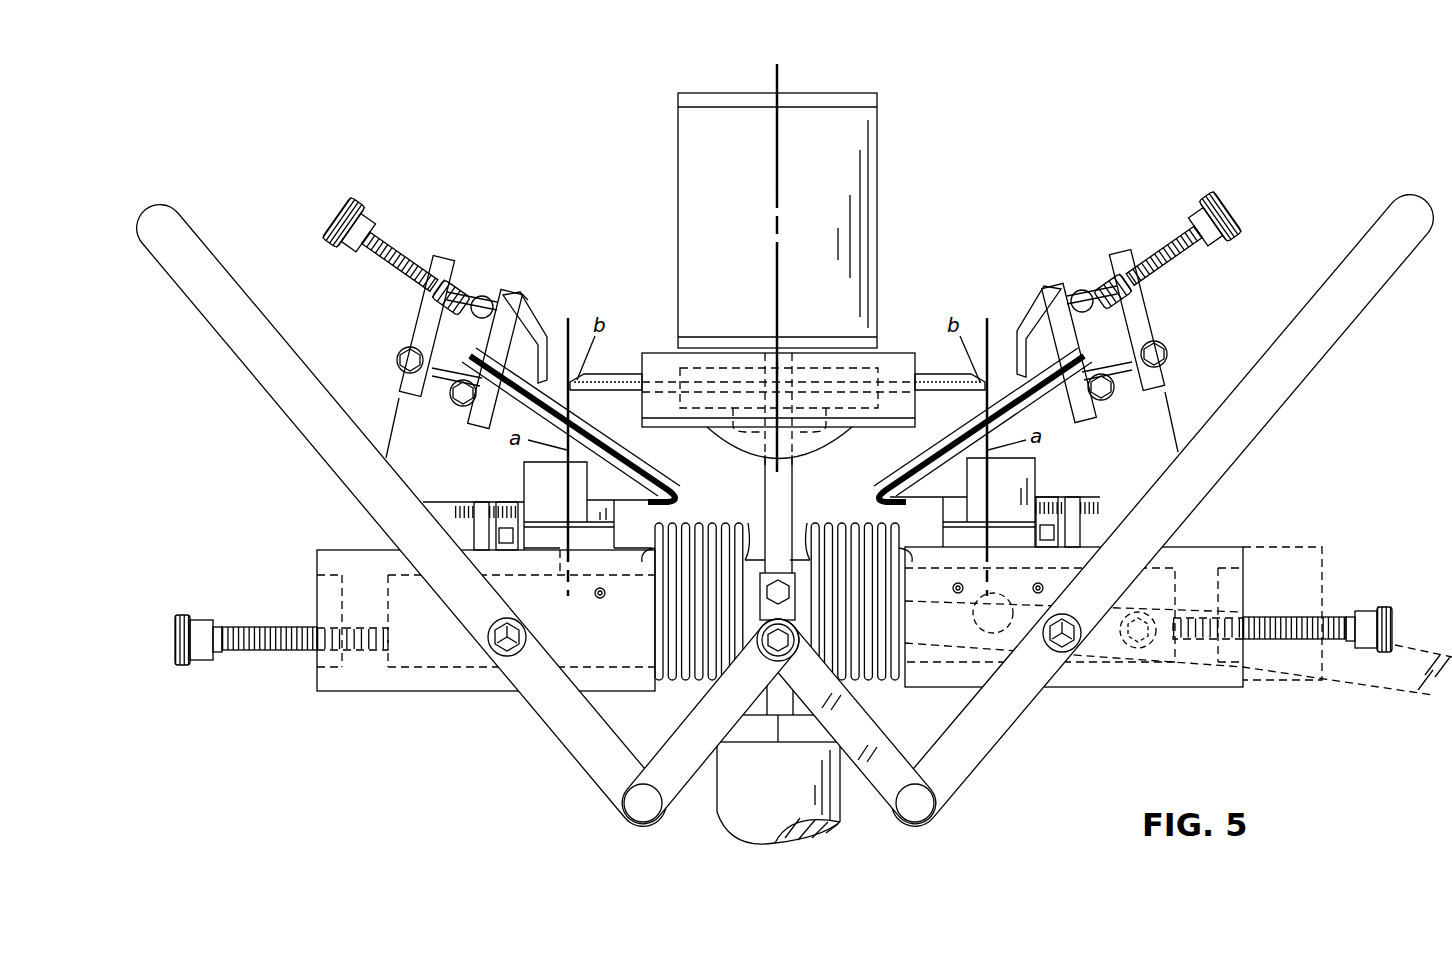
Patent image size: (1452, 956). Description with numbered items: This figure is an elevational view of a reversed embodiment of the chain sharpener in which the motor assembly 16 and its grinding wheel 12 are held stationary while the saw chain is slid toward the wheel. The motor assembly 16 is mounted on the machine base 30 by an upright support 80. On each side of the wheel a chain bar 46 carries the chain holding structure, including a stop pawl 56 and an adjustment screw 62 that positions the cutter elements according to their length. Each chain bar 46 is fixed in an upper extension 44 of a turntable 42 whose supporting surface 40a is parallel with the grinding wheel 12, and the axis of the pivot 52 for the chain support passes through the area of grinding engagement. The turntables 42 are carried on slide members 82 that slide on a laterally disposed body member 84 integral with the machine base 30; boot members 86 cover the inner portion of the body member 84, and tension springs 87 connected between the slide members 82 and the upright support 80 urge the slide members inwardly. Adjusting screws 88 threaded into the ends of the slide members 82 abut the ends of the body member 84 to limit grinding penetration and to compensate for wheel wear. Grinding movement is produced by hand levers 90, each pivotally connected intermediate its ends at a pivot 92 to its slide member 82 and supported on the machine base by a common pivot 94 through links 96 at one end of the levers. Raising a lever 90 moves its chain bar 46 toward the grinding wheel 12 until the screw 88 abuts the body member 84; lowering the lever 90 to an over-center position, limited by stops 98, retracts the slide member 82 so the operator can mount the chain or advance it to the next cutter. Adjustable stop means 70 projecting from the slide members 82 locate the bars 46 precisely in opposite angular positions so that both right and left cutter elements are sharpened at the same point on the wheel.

The grinding wheel 12 is at (929, 378).
The motor assembly 16 is at (866, 181).
The machine base 30 is at (810, 735).
The supporting surface 40a is at (545, 530).
The turntable 42 is at (610, 540).
The upper extension 44 is at (545, 478).
The chain bar 46 is at (402, 403).
The pivot 52 is at (556, 562).
The stop pawl 56 is at (530, 305).
The adjustment screw 62 is at (398, 250).
The adjustable stop means 70 is at (462, 513).
The upright support 80 is at (790, 518).
The slide member 82 is at (335, 549).
The body member 84 is at (774, 572).
The boot member 86 is at (665, 545).
The tension spring 87 is at (715, 520).
The adjusting screw 88 is at (245, 625).
The hand lever 90 is at (197, 297).
The pivot 92 is at (497, 650).
The common pivot 94 is at (766, 650).
The link 96 is at (668, 752).
The stop 98 is at (956, 585).